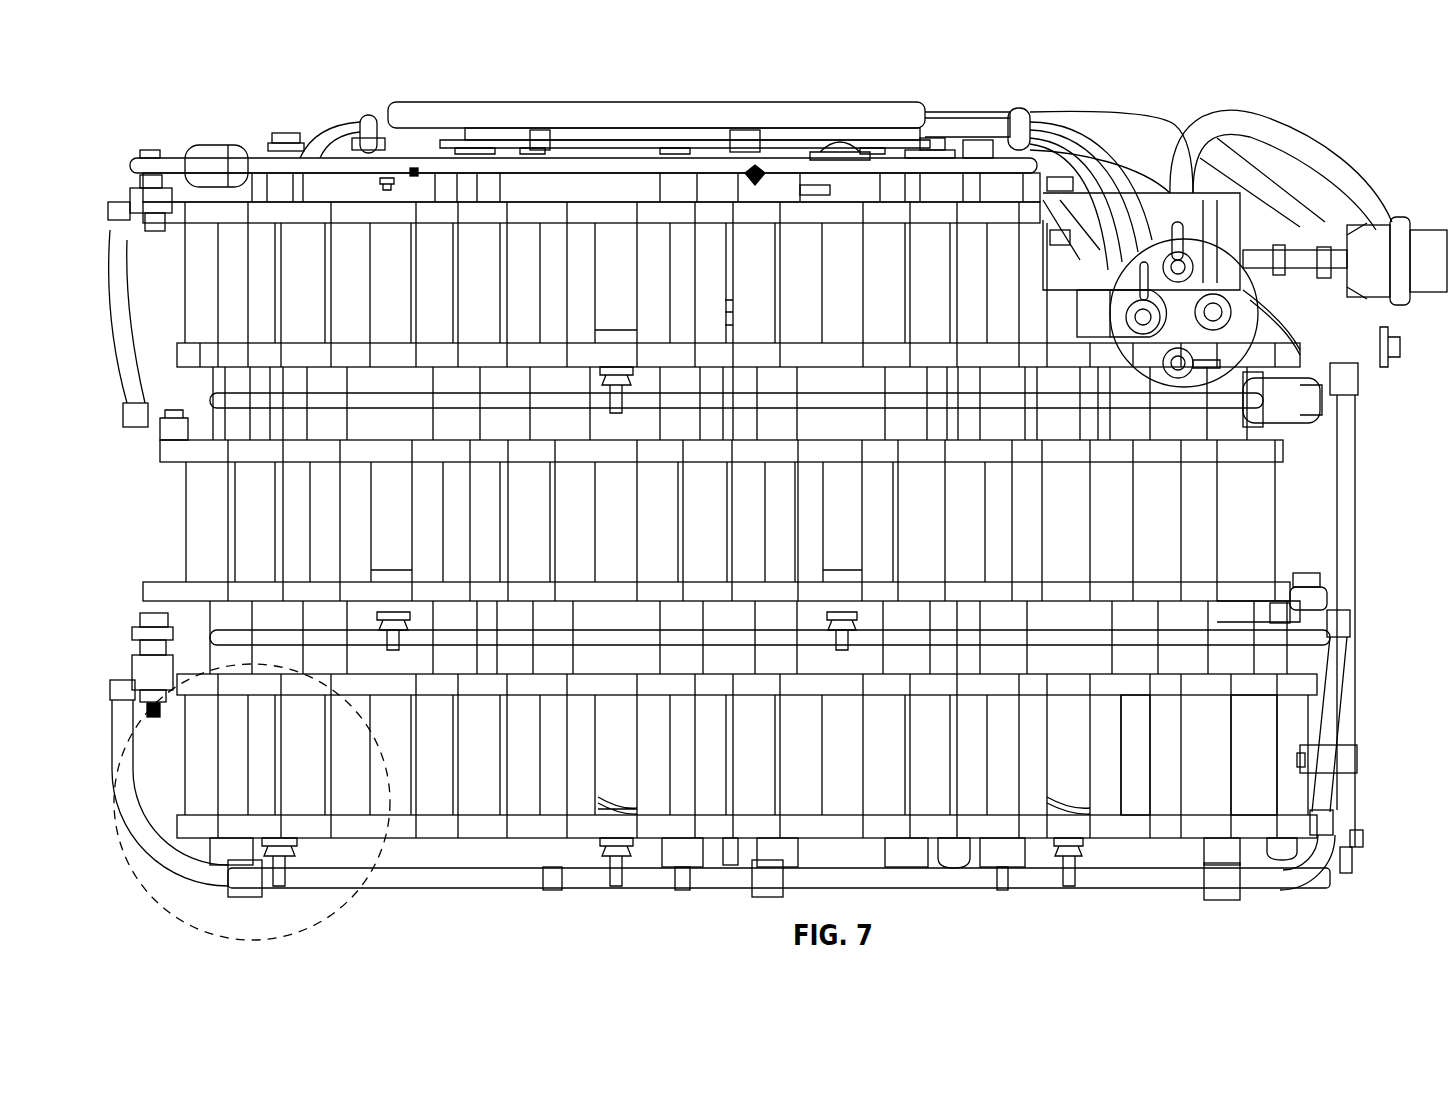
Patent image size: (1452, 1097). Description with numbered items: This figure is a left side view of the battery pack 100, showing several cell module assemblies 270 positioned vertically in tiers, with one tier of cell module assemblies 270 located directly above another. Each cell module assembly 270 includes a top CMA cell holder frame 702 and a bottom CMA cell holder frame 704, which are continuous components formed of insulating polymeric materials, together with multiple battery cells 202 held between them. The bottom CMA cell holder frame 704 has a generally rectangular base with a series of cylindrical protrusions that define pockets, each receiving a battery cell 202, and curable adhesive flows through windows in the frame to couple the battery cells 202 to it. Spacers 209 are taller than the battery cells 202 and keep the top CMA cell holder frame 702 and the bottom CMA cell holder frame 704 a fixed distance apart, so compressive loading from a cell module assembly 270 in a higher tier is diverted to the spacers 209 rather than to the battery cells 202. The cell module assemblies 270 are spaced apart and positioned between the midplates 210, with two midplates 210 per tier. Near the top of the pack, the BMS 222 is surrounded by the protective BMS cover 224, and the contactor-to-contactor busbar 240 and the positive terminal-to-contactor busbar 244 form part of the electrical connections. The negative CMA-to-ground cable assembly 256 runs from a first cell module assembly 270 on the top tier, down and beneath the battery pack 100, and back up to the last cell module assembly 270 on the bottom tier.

The battery pack 100 is at (203, 97).
The battery cell 202 is at (1246, 795).
The spacer 209 is at (1133, 799).
The midplate 210 is at (212, 403).
The BMS 222 is at (443, 128).
The BMS cover 224 is at (473, 128).
The contactor-to-contactor busbar 240 is at (1088, 288).
The positive terminal-to-contactor busbar 244 is at (1222, 232).
The negative CMA-to-ground cable assembly 256 is at (1350, 553).
The cell module assembly 270 is at (299, 903).
The top CMA cell holder frame 702 is at (1230, 449).
The bottom CMA cell holder frame 704 is at (1235, 615).